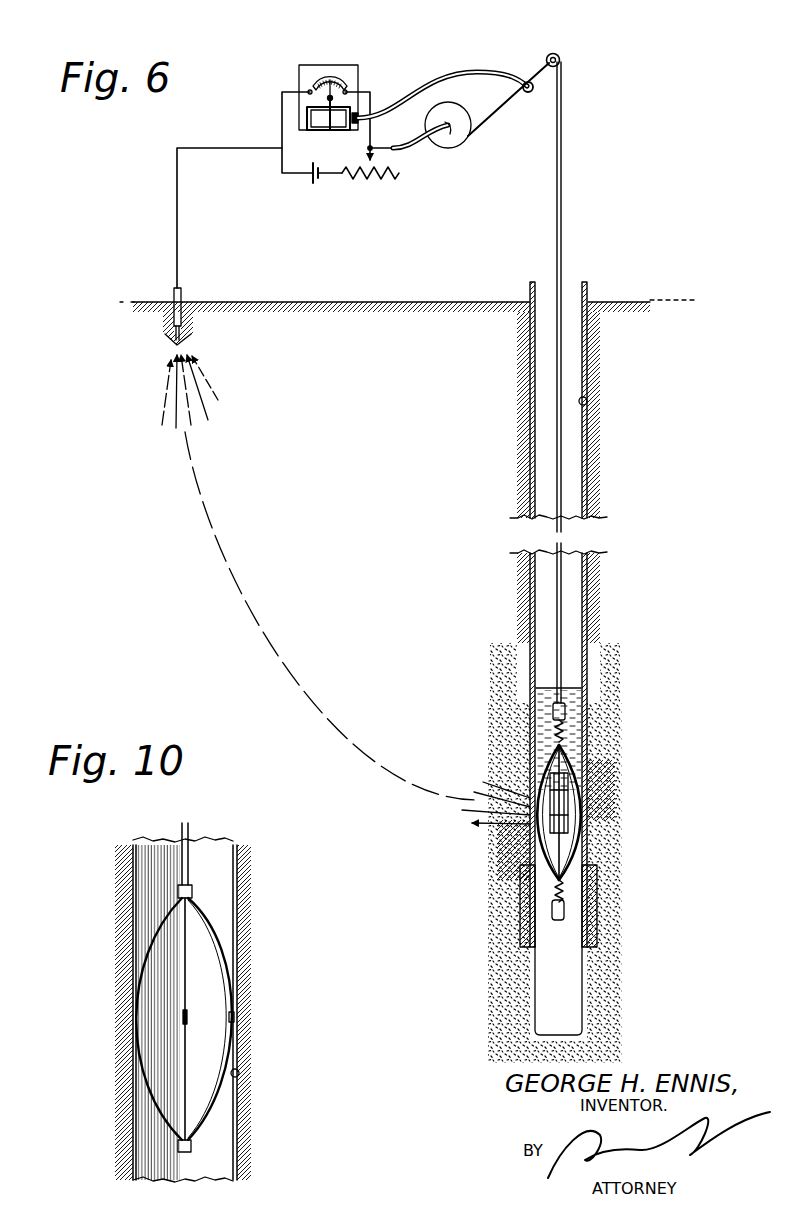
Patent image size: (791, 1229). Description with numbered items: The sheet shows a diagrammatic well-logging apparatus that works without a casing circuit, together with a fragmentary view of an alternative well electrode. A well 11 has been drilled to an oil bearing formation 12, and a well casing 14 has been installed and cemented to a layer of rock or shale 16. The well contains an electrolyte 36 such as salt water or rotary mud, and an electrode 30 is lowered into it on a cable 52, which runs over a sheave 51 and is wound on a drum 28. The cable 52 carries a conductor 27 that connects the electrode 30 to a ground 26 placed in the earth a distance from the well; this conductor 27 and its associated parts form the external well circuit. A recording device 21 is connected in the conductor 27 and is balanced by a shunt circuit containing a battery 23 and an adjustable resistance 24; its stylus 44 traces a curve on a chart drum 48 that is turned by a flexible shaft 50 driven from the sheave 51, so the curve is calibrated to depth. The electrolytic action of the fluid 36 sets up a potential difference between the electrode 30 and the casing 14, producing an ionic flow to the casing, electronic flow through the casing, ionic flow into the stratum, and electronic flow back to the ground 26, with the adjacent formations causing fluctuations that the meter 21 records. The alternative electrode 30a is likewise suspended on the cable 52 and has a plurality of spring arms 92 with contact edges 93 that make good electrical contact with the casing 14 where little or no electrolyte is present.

In FIG. 6, the recording device 21 is at (363, 72).
In FIG. 6, the drum 48 is at (320, 128).
In FIG. 6, the stylus 44 is at (346, 128).
In FIG. 6, the battery 23 is at (313, 174).
In FIG. 6, the adjustable resistance 24 is at (372, 178).
In FIG. 6, the conductor 27 is at (177, 237).
In FIG. 6, the ground 26 is at (195, 302).
In FIG. 6, the drum 28 is at (452, 142).
In FIG. 6, the flexible shaft 50 is at (469, 72).
In FIG. 6, the sheave 51 is at (531, 93).
In FIG. 6, the cable 52 is at (563, 165).
In FIG. 10, the cable 52 is at (188, 828).
In FIG. 6, the well casing 14 is at (530, 380).
In FIG. 10, the well casing 14 is at (238, 1110).
In FIG. 6, the well 11 is at (587, 401).
In FIG. 10, the well 11 is at (240, 1075).
In FIG. 6, the electrolyte 36 is at (568, 711).
In FIG. 6, the electrode 30 is at (585, 805).
In FIG. 6, the layer of rock or shale 16 is at (500, 920).
In FIG. 6, the oil bearing formation 12 is at (600, 947).
In FIG. 10, the spring arms 92 is at (157, 947).
In FIG. 10, the electrode 30a is at (233, 978).
In FIG. 10, the contact edges 93 is at (236, 1018).